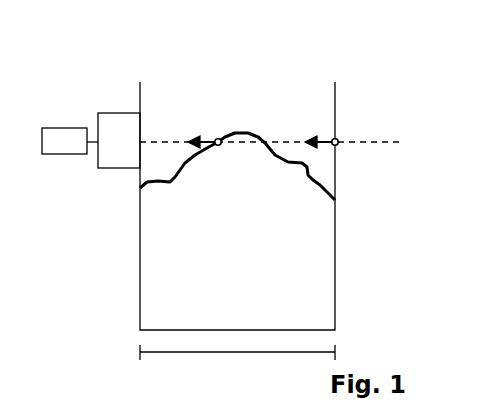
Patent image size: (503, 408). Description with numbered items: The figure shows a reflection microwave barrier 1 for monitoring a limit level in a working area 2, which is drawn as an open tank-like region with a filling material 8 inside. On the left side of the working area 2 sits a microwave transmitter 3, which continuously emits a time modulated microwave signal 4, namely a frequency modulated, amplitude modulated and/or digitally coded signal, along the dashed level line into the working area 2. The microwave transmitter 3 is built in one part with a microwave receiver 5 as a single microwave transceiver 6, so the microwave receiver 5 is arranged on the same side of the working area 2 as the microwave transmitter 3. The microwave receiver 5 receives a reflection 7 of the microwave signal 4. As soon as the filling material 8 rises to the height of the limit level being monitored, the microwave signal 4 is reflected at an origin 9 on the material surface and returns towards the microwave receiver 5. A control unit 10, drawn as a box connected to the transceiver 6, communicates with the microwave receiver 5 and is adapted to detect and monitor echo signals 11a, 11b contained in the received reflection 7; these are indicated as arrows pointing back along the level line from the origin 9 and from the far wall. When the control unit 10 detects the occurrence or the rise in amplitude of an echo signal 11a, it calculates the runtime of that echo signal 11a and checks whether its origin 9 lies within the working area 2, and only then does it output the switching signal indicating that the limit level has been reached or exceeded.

The reflection microwave barrier 1 is at (80, 190).
The working area 2 is at (320, 352).
The microwave transmitter 3 is at (113, 169).
The microwave signal 4 is at (339, 139).
The microwave receiver 5 is at (110, 146).
The microwave transceiver 6 is at (99, 113).
The reflection 7 is at (192, 150).
The filling material 8 is at (308, 186).
The origin 9 is at (217, 138).
The control unit 10 is at (60, 137).
The echo signal 11a is at (190, 138).
The echo signal 11b is at (308, 138).